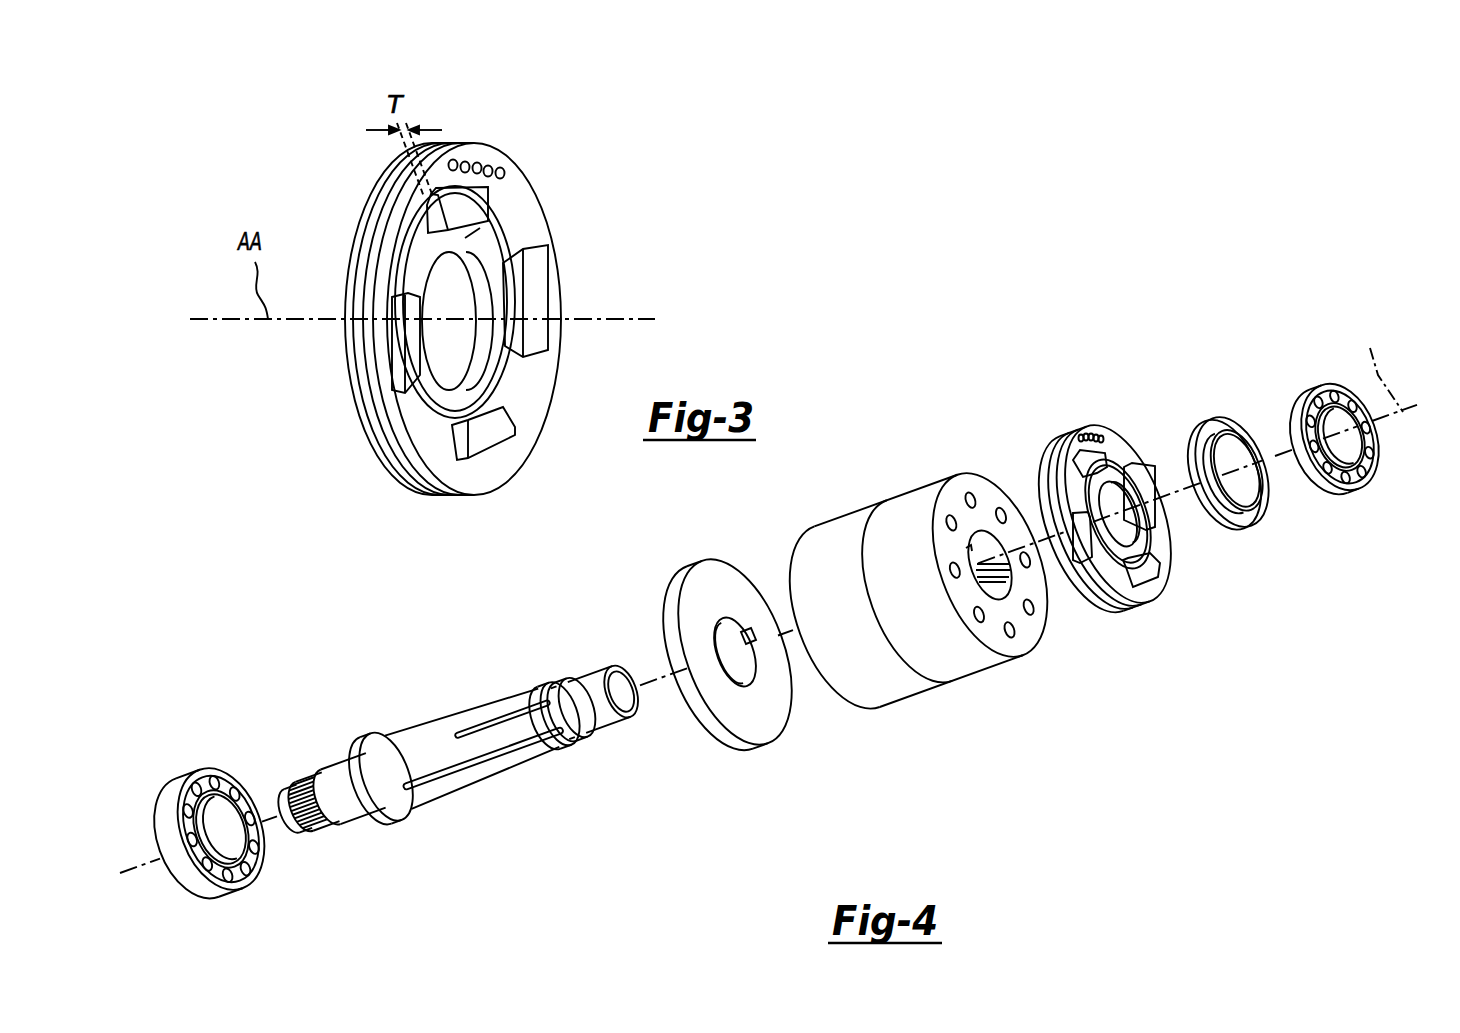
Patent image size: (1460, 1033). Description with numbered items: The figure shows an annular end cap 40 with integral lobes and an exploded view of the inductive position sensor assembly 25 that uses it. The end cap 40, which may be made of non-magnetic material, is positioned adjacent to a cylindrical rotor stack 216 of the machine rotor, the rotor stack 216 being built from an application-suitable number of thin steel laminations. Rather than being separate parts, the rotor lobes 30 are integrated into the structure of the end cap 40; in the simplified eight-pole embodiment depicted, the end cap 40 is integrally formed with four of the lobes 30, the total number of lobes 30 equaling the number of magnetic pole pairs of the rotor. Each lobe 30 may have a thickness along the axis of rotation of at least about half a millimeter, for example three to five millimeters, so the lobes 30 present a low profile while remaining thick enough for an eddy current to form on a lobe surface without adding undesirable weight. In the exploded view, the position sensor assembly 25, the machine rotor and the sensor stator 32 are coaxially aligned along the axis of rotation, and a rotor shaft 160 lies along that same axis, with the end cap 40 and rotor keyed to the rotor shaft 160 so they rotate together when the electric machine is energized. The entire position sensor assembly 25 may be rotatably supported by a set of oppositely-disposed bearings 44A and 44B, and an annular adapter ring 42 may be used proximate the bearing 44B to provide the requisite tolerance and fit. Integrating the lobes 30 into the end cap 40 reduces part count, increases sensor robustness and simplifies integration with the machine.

In FIG. 4, the position sensor assembly 25 is at (1008, 378).
In FIG. 3, the rotor lobes 30 is at (462, 208).
In FIG. 4, the rotor lobes 30 is at (1088, 457).
In FIG. 4, the sensor stator 32 is at (774, 768).
In FIG. 3, the annular end cap 40 is at (630, 168).
In FIG. 4, the annular end cap 40 is at (1163, 637).
In FIG. 4, the annular adapter ring 42 is at (1259, 542).
In FIG. 4, the bearing 44A is at (257, 908).
In FIG. 4, the bearing 44B is at (1355, 510).
In FIG. 4, the rotor shaft 160 is at (496, 796).
In FIG. 4, the cylindrical rotor stack 216 is at (973, 704).